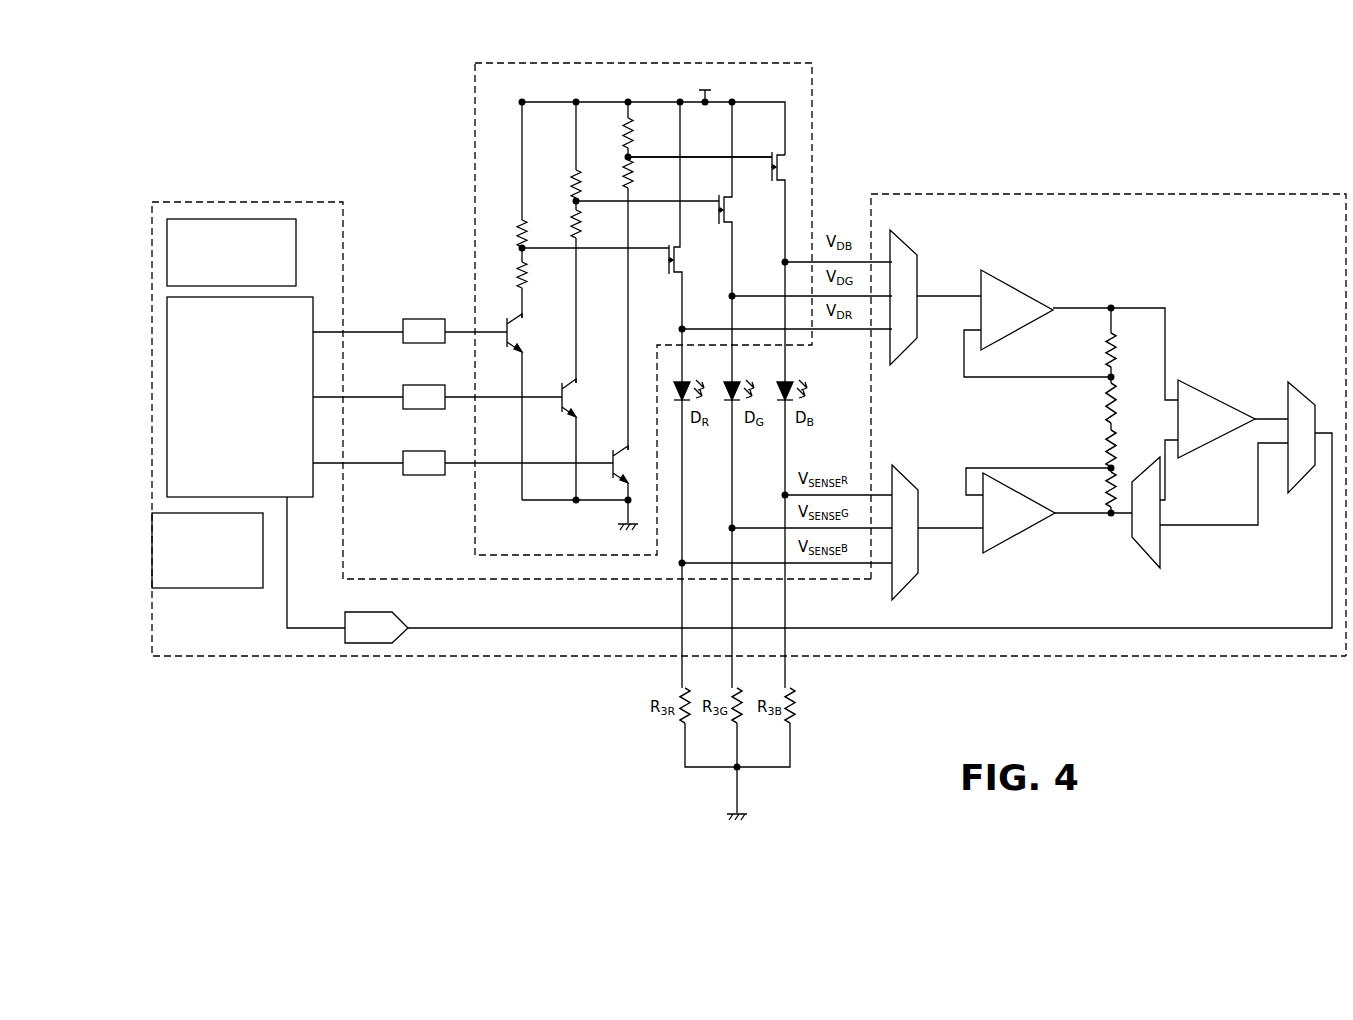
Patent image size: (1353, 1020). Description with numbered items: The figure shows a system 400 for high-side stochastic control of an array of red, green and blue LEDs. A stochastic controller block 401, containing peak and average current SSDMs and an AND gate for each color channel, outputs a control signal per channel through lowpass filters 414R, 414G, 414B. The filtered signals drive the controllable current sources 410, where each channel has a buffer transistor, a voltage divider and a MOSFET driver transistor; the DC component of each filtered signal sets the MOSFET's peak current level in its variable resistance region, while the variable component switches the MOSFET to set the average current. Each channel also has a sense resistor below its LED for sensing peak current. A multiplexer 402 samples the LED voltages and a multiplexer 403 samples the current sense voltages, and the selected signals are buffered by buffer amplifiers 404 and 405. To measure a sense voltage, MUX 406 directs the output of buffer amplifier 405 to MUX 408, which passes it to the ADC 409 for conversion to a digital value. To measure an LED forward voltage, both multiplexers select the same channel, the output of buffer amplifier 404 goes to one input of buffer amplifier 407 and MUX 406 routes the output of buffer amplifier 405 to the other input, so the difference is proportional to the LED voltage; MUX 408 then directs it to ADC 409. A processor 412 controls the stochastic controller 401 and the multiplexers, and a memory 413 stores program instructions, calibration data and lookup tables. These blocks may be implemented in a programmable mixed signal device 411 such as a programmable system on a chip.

The system 400 is at (940, 58).
The stochastic controller block 401 is at (254, 424).
The multiplexer 402 is at (906, 246).
The multiplexer 403 is at (908, 476).
The buffer amplifier 404 is at (1020, 300).
The buffer amplifier 405 is at (1020, 540).
The multiplexer 406 is at (1162, 555).
The buffer amplifier 407 is at (1195, 392).
The multiplexer 408 is at (1298, 387).
The ADC 409 is at (409, 627).
The controllable current sources 410 is at (474, 126).
The programmable mixed signal device 411 is at (1228, 262).
The processor 412 is at (246, 268).
The memory 413 is at (221, 572).
The lowpass filter 414R is at (415, 319).
The lowpass filter 414G is at (413, 385).
The lowpass filter 414B is at (417, 451).